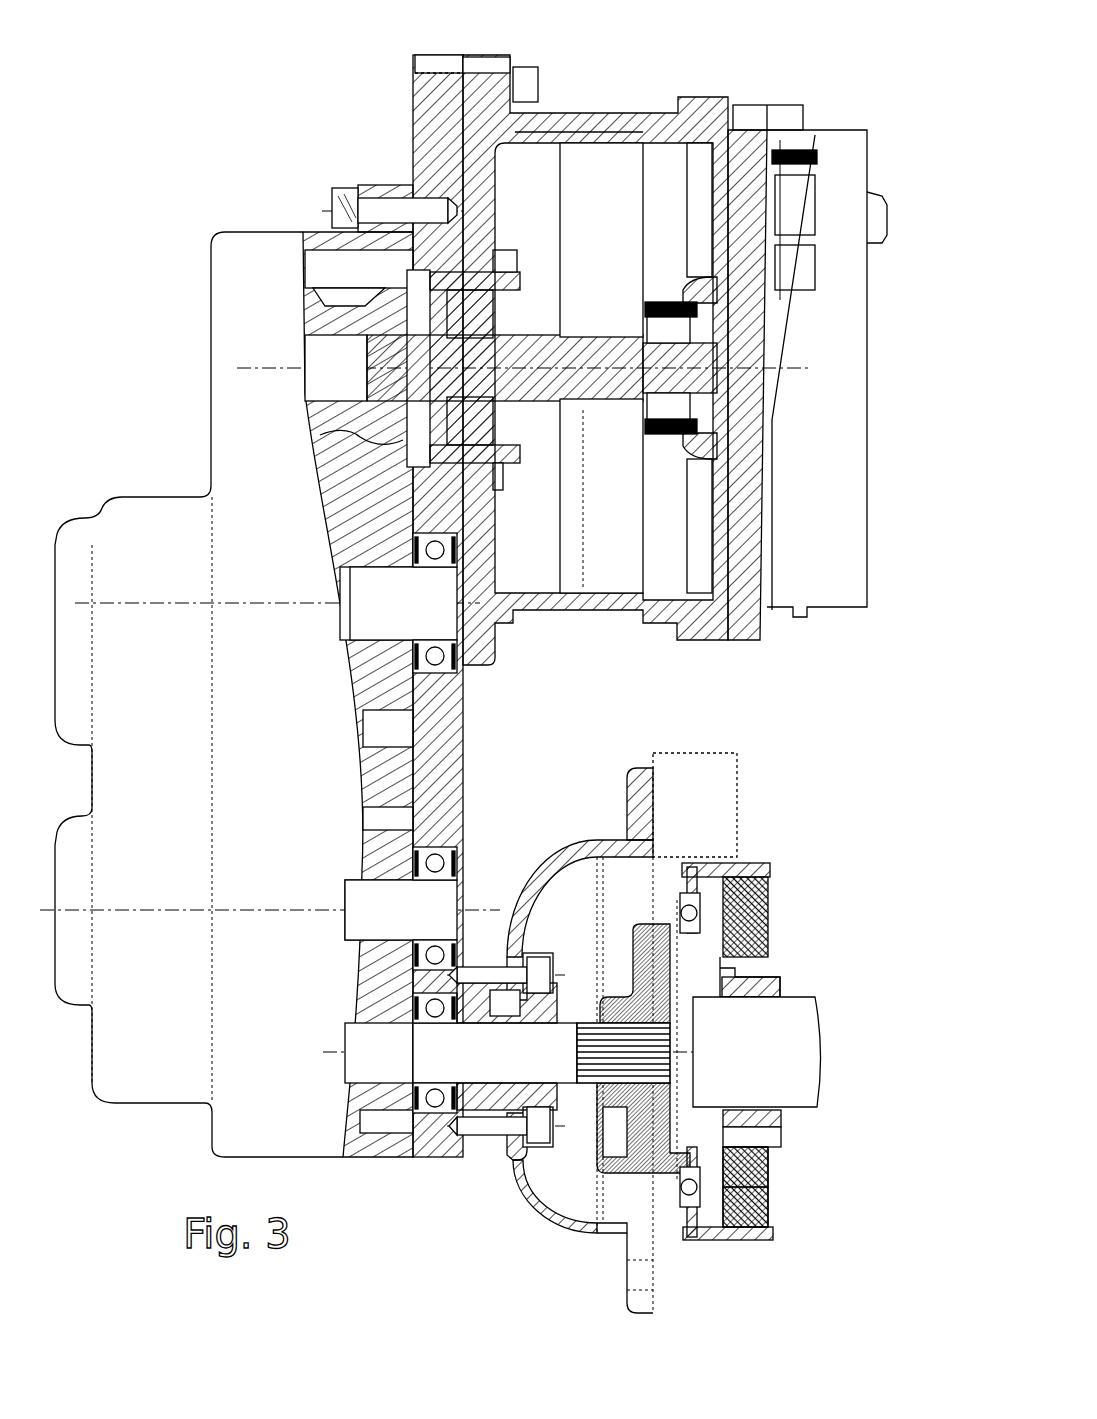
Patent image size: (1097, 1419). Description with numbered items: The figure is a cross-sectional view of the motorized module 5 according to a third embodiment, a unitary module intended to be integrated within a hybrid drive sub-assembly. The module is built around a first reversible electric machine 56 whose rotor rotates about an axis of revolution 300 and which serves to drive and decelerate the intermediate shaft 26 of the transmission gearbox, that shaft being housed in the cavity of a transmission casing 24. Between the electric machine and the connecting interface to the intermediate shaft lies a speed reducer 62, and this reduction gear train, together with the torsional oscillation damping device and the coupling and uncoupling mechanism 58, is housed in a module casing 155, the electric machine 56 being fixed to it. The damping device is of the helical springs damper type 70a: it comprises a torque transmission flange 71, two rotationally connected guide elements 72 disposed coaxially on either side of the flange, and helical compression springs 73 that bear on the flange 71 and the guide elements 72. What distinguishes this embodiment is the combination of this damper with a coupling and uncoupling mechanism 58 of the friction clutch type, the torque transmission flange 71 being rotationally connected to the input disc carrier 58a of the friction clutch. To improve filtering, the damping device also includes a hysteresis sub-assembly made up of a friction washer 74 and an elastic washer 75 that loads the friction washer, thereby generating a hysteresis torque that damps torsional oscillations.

The motorized module 5 is at (240, 120).
The first reversible electric machine 56 is at (600, 110).
The axis of revolution 300 is at (280, 367).
The module casing 155 is at (211, 366).
The speed reducer 62 is at (338, 497).
The helical springs damper type 70a is at (617, 866).
The guide elements 72 is at (660, 928).
The torque transmission flange 71 is at (698, 898).
The transmission casing 24 is at (738, 830).
The input disc carrier 58a is at (695, 880).
The helical compression springs 73 is at (700, 913).
The coupling and uncoupling mechanism 58 is at (832, 911).
The intermediate shaft 26 is at (768, 1050).
The friction washer 74 is at (703, 1160).
The elastic washer 75 is at (839, 1176).